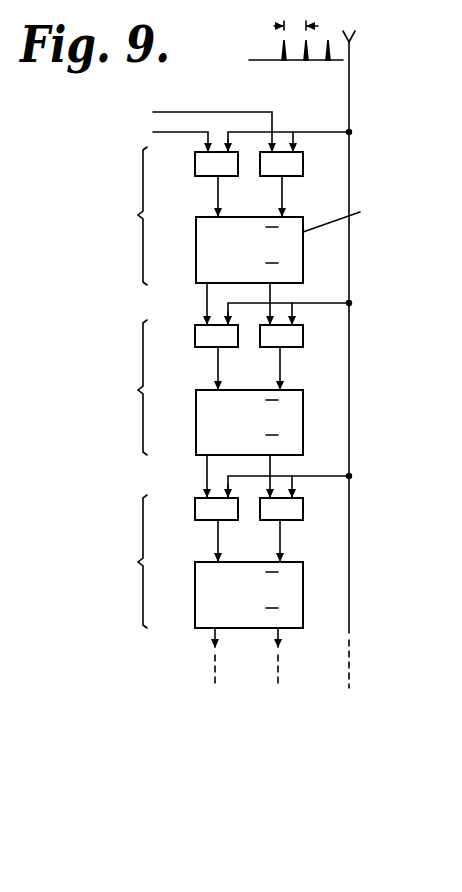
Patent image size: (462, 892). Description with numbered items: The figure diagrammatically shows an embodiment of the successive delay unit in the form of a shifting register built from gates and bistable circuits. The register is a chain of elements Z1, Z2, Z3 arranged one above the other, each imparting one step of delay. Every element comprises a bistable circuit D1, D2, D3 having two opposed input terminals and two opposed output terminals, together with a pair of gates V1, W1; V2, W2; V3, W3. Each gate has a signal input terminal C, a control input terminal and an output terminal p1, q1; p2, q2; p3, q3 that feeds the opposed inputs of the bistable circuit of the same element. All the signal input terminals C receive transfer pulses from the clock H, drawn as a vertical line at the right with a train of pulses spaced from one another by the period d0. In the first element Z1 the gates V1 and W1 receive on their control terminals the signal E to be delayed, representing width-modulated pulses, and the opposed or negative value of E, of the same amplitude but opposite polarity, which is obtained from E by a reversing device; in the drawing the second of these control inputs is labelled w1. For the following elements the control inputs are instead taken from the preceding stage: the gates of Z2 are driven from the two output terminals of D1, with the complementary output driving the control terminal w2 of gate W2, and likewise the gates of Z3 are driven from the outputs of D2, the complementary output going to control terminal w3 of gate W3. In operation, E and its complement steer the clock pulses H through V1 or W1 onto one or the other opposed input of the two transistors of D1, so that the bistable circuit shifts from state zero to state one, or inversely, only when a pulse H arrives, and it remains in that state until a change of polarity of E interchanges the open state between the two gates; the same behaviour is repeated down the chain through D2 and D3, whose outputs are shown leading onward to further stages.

The clock H is at (350, 346).
The clock period d0 is at (296, 31).
The signal to be delayed E is at (147, 101).
The signal input terminal C is at (232, 152).
The control input terminal w1 is at (288, 130).
The control input terminal w2 is at (288, 301).
The control input terminal w3 is at (288, 474).
The first element Z1 is at (124, 216).
The second element Z2 is at (124, 387).
The third element Z3 is at (125, 561).
The gate V1 is at (195, 170).
The gate W1 is at (303, 176).
The gate V2 is at (195, 338).
The gate W2 is at (303, 338).
The gate V3 is at (195, 511).
The gate W3 is at (303, 511).
The output terminal p1 is at (215, 178).
The output terminal q1 is at (279, 178).
The output terminal p2 is at (215, 348).
The output terminal q2 is at (279, 348).
The output terminal p3 is at (215, 521).
The output terminal q3 is at (279, 521).
The bistable circuit D1 is at (303, 247).
The bistable circuit D2 is at (303, 420).
The bistable circuit D3 is at (303, 595).